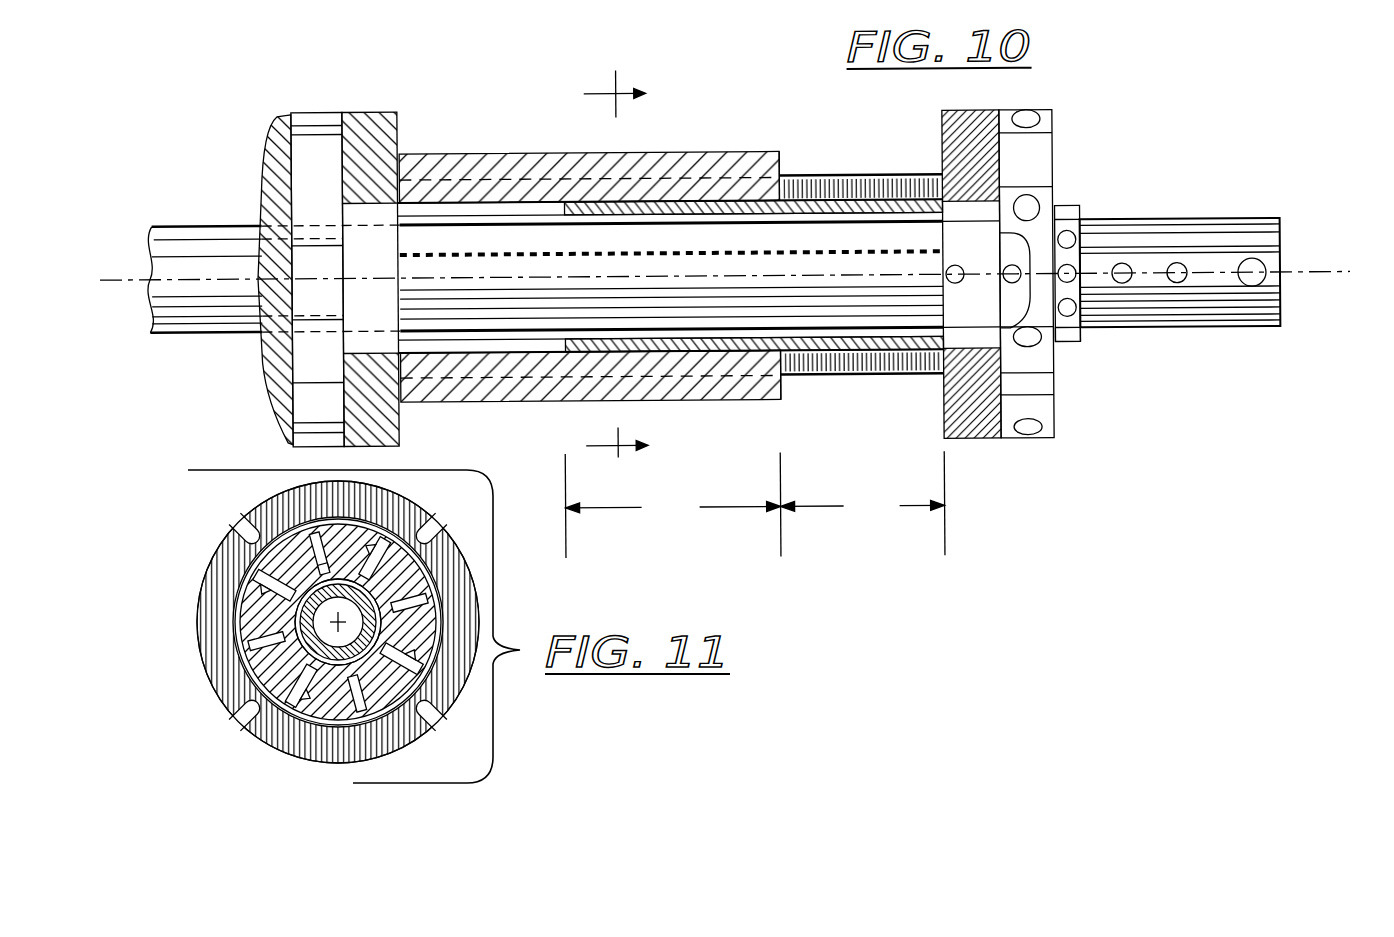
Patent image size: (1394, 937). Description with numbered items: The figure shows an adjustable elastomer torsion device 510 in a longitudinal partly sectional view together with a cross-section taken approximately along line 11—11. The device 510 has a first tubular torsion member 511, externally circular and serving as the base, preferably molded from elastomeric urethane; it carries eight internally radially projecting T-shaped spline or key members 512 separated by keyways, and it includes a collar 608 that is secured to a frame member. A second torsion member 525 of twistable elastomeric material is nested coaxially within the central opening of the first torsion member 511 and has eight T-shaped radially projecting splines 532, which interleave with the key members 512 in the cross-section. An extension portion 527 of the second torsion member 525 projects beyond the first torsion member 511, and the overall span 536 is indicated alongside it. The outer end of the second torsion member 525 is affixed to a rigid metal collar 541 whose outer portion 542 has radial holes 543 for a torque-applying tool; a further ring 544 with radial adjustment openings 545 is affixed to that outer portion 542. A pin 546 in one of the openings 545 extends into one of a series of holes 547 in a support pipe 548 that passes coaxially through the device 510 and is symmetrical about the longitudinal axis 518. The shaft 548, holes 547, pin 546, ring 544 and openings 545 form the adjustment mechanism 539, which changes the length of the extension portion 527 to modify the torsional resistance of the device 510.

In FIG. 10, the adjustable torsion device 510 is at (818, 140).
In FIG. 11, the adjustable torsion device 510 is at (227, 516).
In FIG. 10, the first tubular torsion member 511 is at (545, 175).
In FIG. 11, the first tubular torsion member 511 is at (243, 623).
In FIG. 10, the spline or key members 512 is at (437, 220).
In FIG. 11, the spline or key members 512 is at (283, 568).
In FIG. 10, the longitudinal axis 518 is at (1307, 276).
In FIG. 11, the longitudinal axis 518 is at (330, 634).
In FIG. 10, the second torsion member 525 is at (832, 378).
In FIG. 11, the second torsion member 525 is at (300, 650).
In FIG. 10, the extension portion 527 is at (862, 503).
In FIG. 10, the splines or keys 532 is at (832, 176).
In FIG. 11, the splines or keys 532 is at (348, 555).
In FIG. 10, the length dimension 536 is at (673, 504).
In FIG. 10, the adjustment mechanism 539 is at (1186, 142).
In FIG. 10, the rigid collar 541 is at (963, 110).
In FIG. 11, the rigid collar 541 is at (328, 768).
In FIG. 10, the outer portion 542 is at (1027, 155).
In FIG. 10, the radial holes 543 is at (1030, 112).
In FIG. 10, the ring 544 is at (1065, 208).
In FIG. 10, the radial adjustment openings 545 is at (1092, 346).
In FIG. 10, the pin 546 is at (1100, 265).
In FIG. 10, the holes 547 is at (1008, 268).
In FIG. 10, the support pipe 548 is at (220, 225).
In FIG. 11, the support pipe 548 is at (300, 637).
In FIG. 10, the collar 608 is at (302, 110).
In FIG. 10, the section line 11- 11 is at (616, 260).